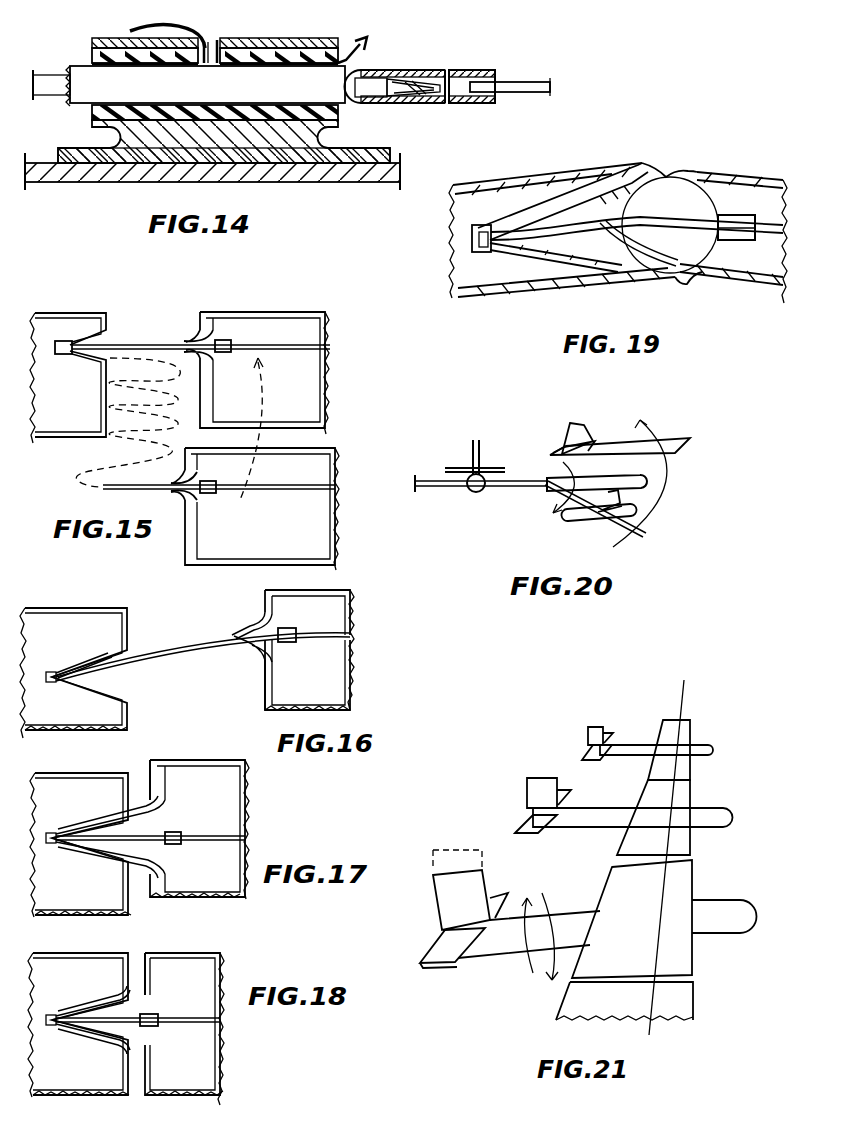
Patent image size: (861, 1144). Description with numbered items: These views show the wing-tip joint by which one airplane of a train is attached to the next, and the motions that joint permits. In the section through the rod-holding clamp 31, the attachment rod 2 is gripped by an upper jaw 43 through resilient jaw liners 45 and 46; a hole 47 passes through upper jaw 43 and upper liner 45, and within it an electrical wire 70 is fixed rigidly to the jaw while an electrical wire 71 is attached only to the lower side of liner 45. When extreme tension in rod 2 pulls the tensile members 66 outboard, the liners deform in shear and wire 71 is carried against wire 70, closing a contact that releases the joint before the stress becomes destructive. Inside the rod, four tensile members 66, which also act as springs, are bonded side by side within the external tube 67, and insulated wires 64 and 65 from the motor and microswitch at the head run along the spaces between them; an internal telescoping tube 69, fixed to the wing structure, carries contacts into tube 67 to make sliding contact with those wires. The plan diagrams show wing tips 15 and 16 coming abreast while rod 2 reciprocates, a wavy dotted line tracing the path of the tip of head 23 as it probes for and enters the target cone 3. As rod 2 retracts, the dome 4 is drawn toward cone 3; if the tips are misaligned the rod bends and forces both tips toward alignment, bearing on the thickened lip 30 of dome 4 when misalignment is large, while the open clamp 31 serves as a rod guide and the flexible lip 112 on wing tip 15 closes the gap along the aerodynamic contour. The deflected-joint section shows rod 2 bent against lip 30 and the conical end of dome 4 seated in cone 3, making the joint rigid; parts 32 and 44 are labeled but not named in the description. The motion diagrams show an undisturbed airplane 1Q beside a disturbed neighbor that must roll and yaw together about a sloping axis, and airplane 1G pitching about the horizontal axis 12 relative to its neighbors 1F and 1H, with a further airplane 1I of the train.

In FIG. 14, the attachment rod 2 is at (140, 85).
In FIG. 19, the attachment rod 2 is at (672, 224).
In FIG. 15, the attachment rod 2 is at (133, 344).
In FIG. 16, the attachment rod 2 is at (184, 647).
In FIG. 17, the attachment rod 2 is at (150, 837).
In FIG. 18, the attachment rod 2 is at (138, 1020).
In FIG. 19, the cone 3 is at (597, 250).
In FIG. 16, the cone 3 is at (86, 663).
In FIG. 19, the dome 4 is at (676, 173).
In FIG. 16, the dome 4 is at (248, 616).
In FIG. 21, the axis 12 is at (689, 691).
In FIG. 14, the wing tip 15 is at (358, 183).
In FIG. 19, the wing tip 15 is at (767, 172).
In FIG. 15, the wing tip 15 is at (272, 310).
In FIG. 16, the wing tip 15 is at (350, 602).
In FIG. 17, the wing tip 15 is at (240, 790).
In FIG. 18, the wing tip 15 is at (196, 1106).
In FIG. 19, the wing tip 16 is at (564, 177).
In FIG. 15, the wing tip 16 is at (87, 308).
In FIG. 16, the wing tip 16 is at (66, 611).
In FIG. 17, the wing tip 16 is at (58, 775).
In FIG. 18, the wing tip 16 is at (44, 955).
In FIG. 19, the attachment head 23 is at (506, 254).
In FIG. 15, the attachment head 23 is at (70, 473).
In FIG. 19, the lip 30 is at (629, 228).
In FIG. 16, the lip 30 is at (234, 644).
In FIG. 19, the clamp 31 is at (743, 237).
In FIG. 16, the clamp 31 is at (299, 621).
In FIG. 19, the clip slot 32 is at (708, 188).
In FIG. 14, the upper jaw 43 is at (115, 38).
In FIG. 14, the block 44 is at (102, 126).
In FIG. 14, the upper resilient jaw liner 45 is at (88, 58).
In FIG. 14, the lower resilient jaw liner 46 is at (92, 106).
In FIG. 14, the hole 47 is at (213, 37).
In FIG. 14, the insulated wire 64 is at (429, 69).
In FIG. 14, the insulated wire 65 is at (428, 98).
In FIG. 14, the tensile members 66 is at (50, 70).
In FIG. 14, the external tube 67 is at (385, 70).
In FIG. 14, the internal telescoping tube 69 is at (527, 82).
In FIG. 14, the electrical wire 70 is at (130, 31).
In FIG. 14, the electrical wire 71 is at (356, 44).
In FIG. 16, the flexible lip 112 is at (262, 688).
In FIG. 17, the flexible lip 112 is at (150, 760).
In FIG. 18, the flexible lip 112 is at (138, 953).
In FIG. 20, the undisturbed airplane 1Q is at (478, 447).
In FIG. 21, the aircraft 1I is at (720, 748).
In FIG. 21, the neighboring airplane 1H is at (733, 819).
In FIG. 21, the individual airplane 1G is at (748, 918).
In FIG. 21, the neighboring airplane 1F is at (693, 1003).